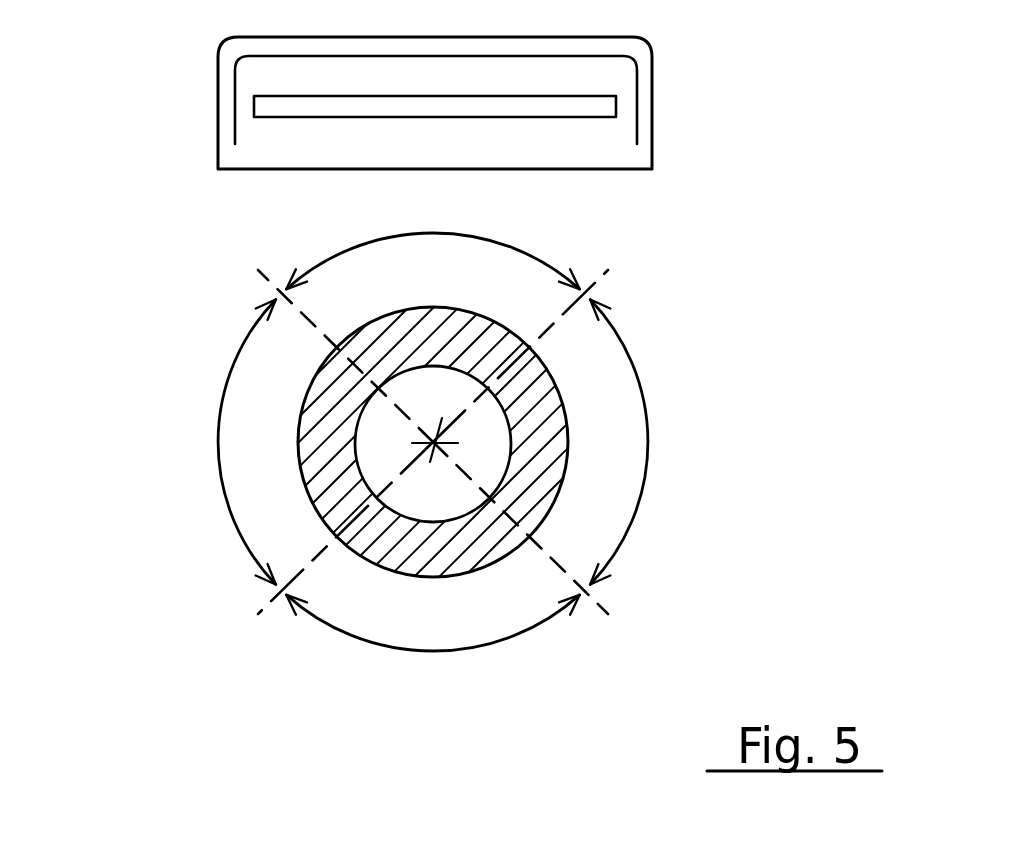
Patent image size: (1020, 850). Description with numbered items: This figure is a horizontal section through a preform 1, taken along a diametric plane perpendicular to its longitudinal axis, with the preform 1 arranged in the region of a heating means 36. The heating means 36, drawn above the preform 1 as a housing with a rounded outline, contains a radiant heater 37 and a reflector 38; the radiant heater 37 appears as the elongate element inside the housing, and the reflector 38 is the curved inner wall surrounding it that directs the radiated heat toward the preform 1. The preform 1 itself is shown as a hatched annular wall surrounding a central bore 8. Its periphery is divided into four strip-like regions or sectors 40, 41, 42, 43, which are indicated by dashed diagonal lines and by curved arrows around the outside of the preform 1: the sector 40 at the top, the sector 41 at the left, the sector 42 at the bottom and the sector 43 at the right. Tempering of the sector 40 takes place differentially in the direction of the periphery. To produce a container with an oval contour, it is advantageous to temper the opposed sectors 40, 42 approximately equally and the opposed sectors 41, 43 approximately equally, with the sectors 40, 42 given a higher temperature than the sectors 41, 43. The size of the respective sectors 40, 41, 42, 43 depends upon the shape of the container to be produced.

The preform 1 is at (540, 465).
The central bore 8 is at (433, 443).
The heating means 36 is at (652, 110).
The radiant heater 37 is at (262, 105).
The reflector 38 is at (637, 83).
The sector 40 is at (553, 267).
The sector 41 is at (218, 460).
The sector 42 is at (343, 640).
The sector 43 is at (643, 395).